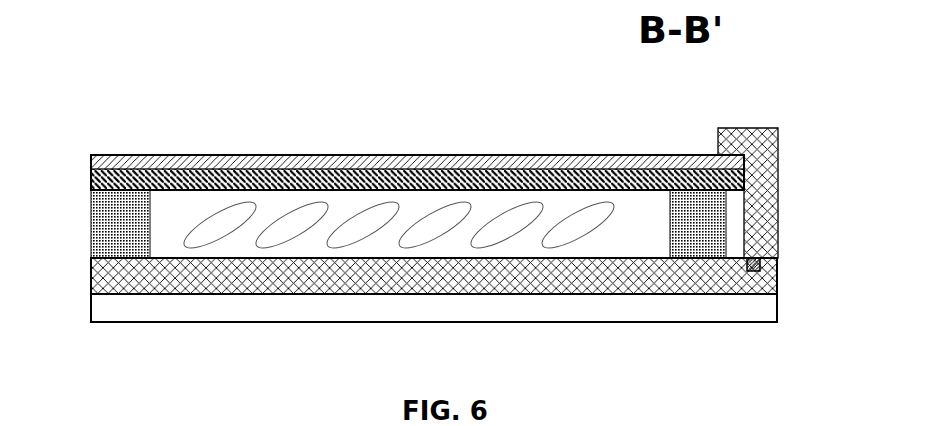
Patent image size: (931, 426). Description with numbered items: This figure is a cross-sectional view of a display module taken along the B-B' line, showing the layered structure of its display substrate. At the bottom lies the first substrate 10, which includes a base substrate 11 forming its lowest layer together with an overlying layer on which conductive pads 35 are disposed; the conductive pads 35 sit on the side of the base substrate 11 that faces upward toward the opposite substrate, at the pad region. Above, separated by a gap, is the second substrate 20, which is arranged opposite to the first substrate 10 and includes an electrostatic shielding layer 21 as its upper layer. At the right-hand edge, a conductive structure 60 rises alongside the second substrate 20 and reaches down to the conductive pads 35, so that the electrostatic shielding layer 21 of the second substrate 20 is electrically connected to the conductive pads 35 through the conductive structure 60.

The first substrate 10 is at (406, 312).
The base substrate 11 is at (258, 312).
The second substrate 20 is at (389, 150).
The electrostatic shielding layer 21 is at (343, 155).
The conductive pad 35 is at (762, 268).
The conductive structure 60 is at (764, 135).